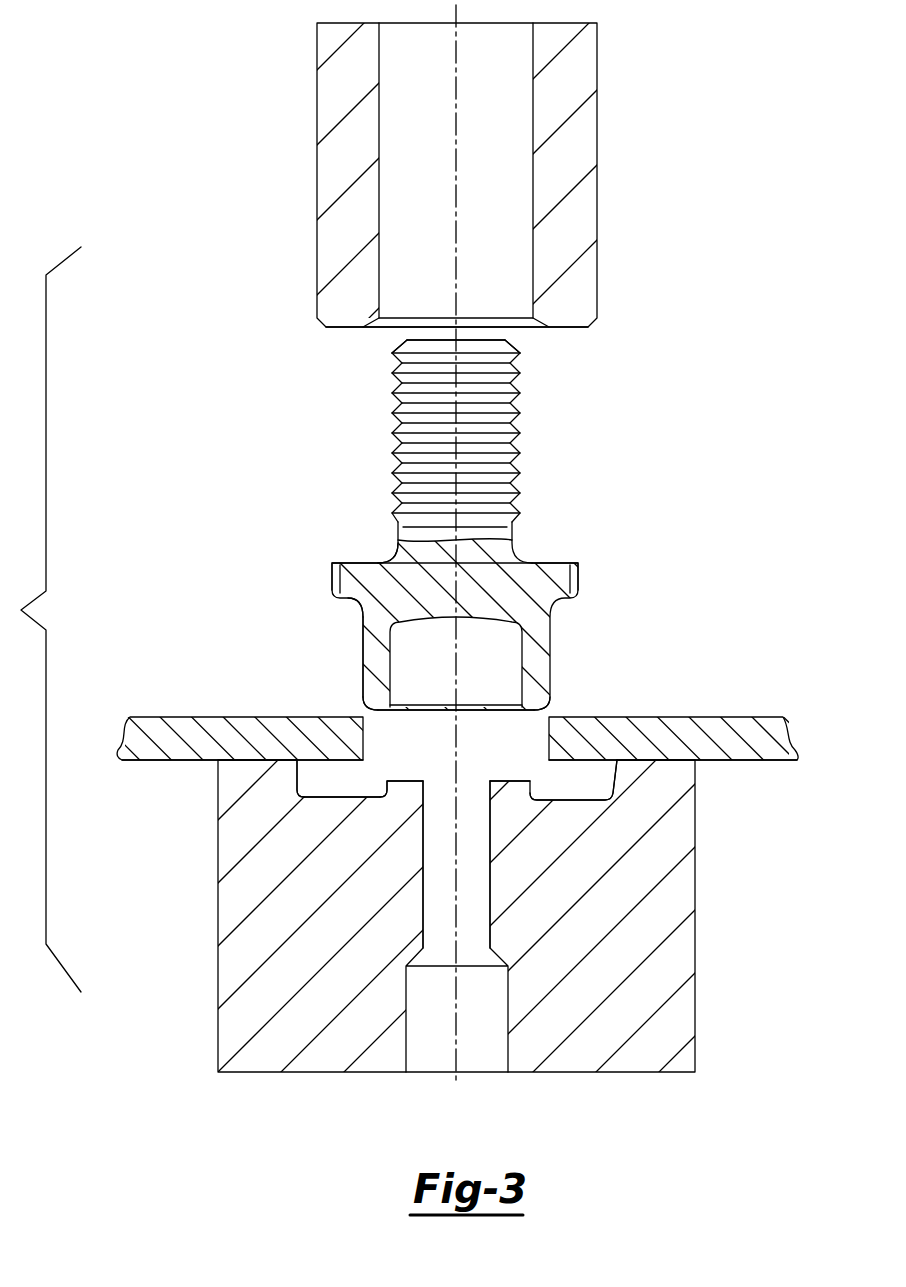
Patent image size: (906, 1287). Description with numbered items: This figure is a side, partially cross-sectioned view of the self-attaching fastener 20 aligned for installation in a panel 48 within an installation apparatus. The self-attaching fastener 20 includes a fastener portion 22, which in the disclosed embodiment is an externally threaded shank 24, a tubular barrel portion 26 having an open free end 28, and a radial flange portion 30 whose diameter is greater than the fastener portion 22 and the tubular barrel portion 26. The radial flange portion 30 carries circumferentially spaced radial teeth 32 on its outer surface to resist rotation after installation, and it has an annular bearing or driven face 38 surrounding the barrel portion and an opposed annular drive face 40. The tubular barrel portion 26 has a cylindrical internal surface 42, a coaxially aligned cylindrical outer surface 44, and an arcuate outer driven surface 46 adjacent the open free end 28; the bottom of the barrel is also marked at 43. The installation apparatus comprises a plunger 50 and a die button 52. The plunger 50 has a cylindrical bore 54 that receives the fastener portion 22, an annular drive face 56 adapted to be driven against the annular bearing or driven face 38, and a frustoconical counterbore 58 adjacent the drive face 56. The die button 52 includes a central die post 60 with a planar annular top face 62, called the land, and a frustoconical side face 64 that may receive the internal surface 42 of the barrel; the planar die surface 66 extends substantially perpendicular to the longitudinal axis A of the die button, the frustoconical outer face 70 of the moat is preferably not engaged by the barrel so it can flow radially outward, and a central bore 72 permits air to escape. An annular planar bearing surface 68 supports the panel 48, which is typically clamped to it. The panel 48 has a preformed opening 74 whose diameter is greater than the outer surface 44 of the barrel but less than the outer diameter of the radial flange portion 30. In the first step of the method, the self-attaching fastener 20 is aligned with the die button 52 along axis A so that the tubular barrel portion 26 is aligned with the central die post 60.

The self-attaching fastener 20 is at (453, 643).
The fastener portion 22 is at (480, 431).
The externally threaded shank 24 is at (392, 364).
The tubular barrel portion 26 is at (453, 643).
The open free end 28 is at (540, 710).
The radial flange portion 30 is at (548, 574).
The radial teeth 32 is at (326, 578).
The annular bearing or driven face 38 is at (355, 562).
The annular drive face 40 is at (347, 604).
The cylindrical internal surface 42 is at (392, 677).
The recess bottom 43 is at (468, 706).
The cylindrical outer surface 44 is at (363, 650).
The arcuate outer driven surface 46 is at (378, 706).
The panel 48 is at (453, 643).
The plunger 50 is at (418, 643).
The die button 52 is at (453, 643).
The bore 54 is at (533, 186).
The annular drive face 56 is at (565, 327).
The frustoconical counterbore 58 is at (416, 323).
The central die post 60 is at (497, 795).
The annular top face 62 is at (512, 781).
The frustoconical side face 64 is at (378, 804).
The die surface 66 is at (345, 796).
The annular planar bearing surface 68 is at (242, 757).
The outer face 70 is at (299, 787).
The central bore 72 is at (432, 907).
The opening 74 is at (393, 722).
The longitudinal axis A is at (456, 1040).